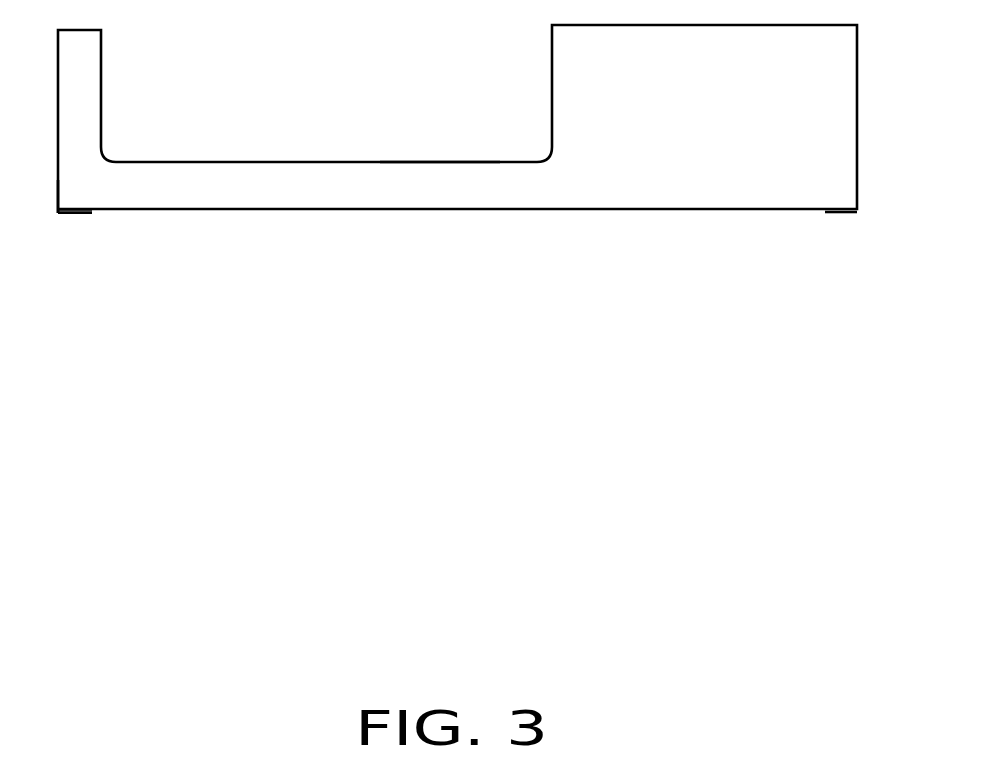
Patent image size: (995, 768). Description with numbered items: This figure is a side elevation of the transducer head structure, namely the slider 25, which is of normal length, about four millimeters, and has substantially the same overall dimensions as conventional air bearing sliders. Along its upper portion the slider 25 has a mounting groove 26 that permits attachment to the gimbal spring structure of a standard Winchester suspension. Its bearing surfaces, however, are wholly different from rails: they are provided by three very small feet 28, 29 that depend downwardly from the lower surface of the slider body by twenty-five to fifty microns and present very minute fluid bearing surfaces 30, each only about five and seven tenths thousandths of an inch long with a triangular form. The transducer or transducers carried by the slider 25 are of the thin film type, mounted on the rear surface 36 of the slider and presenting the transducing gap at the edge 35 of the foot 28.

The slider 25 is at (694, 138).
The mounting groove 26 is at (439, 162).
The foot 28 is at (62, 212).
The foot 29 is at (857, 209).
The fluid bearing surface 30 is at (70, 214).
The edge of the foot 35 is at (60, 214).
The rear surface 36 is at (58, 199).